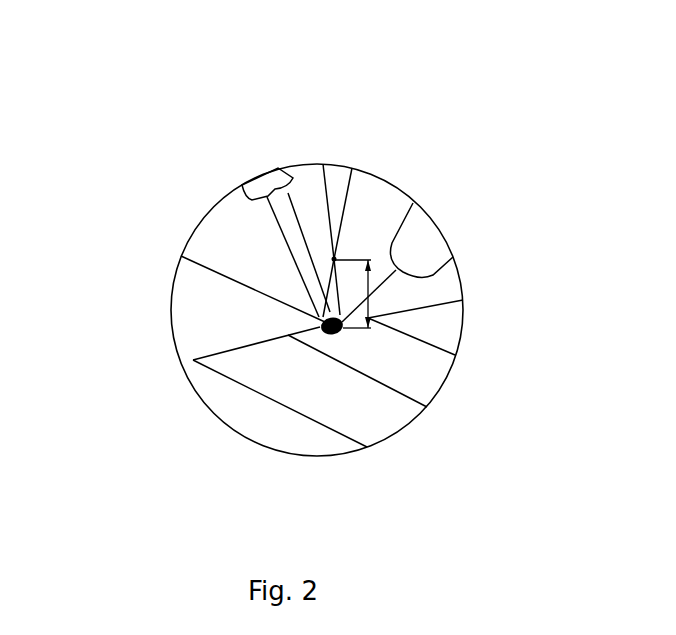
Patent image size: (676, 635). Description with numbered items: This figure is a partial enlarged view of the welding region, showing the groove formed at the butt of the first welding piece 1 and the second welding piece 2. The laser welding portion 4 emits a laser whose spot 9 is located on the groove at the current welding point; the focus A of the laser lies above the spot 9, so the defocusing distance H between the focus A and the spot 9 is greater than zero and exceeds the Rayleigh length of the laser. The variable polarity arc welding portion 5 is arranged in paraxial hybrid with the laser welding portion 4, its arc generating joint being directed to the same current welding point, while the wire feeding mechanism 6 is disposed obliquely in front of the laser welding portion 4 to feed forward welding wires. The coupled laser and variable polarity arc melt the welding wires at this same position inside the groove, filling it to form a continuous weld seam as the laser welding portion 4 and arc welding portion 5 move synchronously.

The first welding piece 1 is at (197, 310).
The second welding piece 2 is at (228, 248).
The laser welding portion 4 is at (335, 187).
The variable polarity arc welding portion 5 is at (418, 250).
The wire feeding mechanism 6 is at (278, 168).
The spot 9 is at (326, 324).